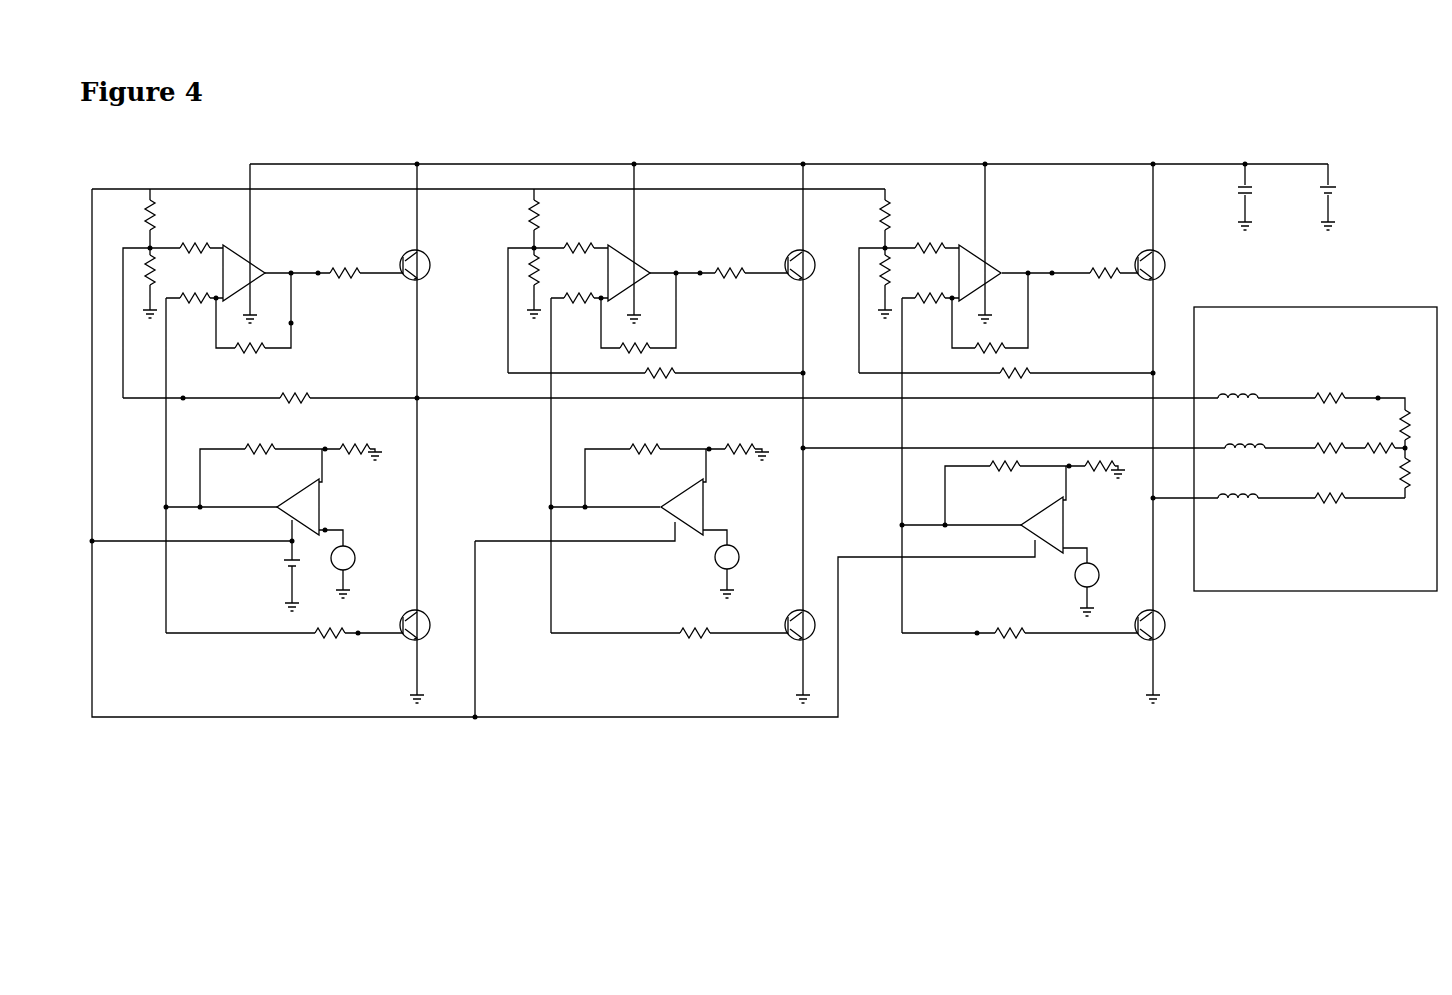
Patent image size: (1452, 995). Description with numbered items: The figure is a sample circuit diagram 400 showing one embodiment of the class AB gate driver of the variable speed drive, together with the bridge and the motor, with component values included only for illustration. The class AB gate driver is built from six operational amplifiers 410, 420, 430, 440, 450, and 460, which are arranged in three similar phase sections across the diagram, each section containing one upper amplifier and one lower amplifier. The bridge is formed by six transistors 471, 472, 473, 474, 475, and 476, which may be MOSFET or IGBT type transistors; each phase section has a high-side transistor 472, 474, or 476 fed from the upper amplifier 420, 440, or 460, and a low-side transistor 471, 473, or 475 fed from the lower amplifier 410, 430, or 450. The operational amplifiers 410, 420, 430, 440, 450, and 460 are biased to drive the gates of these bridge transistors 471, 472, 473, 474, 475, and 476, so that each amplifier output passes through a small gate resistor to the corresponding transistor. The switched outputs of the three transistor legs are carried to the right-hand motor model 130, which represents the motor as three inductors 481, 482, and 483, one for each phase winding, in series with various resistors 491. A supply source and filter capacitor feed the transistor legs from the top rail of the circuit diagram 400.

The circuit diagram 400 is at (745, 140).
The operational amplifier 410 is at (320, 512).
The operational amplifier 420 is at (258, 262).
The operational amplifier 430 is at (705, 520).
The operational amplifier 440 is at (640, 262).
The operational amplifier 450 is at (1065, 535).
The operational amplifier 460 is at (997, 262).
The transistor 471 is at (395, 650).
The transistor 472 is at (393, 290).
The transistor 473 is at (780, 650).
The transistor 474 is at (778, 290).
The transistor 475 is at (1130, 650).
The transistor 476 is at (1128, 290).
The inductor 481 is at (1251, 396).
The inductor 482 is at (1216, 443).
The inductor 483 is at (1241, 530).
The resistors 491 is at (1335, 428).
The motor model 130 is at (1362, 307).